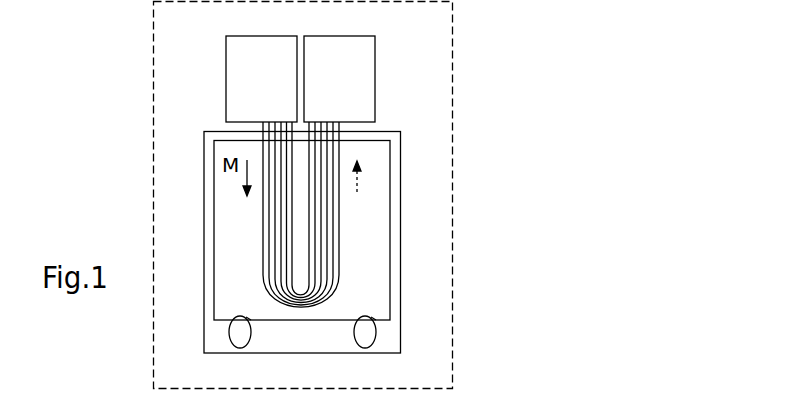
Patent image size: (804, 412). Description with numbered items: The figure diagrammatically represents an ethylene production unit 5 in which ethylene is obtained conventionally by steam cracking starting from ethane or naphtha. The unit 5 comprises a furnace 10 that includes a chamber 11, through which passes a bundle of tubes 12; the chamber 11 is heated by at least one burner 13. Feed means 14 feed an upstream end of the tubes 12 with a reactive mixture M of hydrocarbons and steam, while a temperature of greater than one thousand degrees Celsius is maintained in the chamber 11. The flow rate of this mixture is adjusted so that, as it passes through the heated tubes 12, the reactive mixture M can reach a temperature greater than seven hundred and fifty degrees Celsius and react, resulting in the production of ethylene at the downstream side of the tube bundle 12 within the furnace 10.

The ethylene production unit 5 is at (452, 149).
The furnace 10 is at (204, 191).
The chamber 11 is at (373, 233).
The bundle of tubes 12 is at (340, 254).
The burner 13 is at (367, 330).
The feed means 14 is at (273, 90).